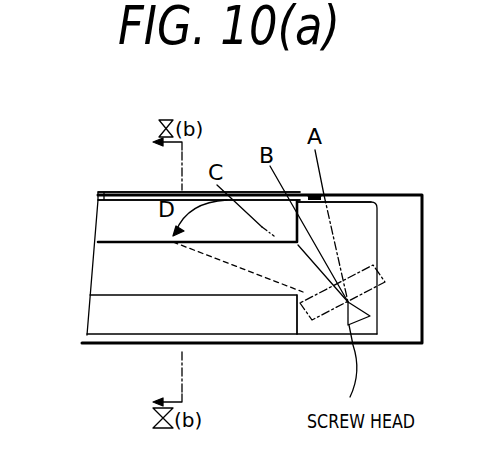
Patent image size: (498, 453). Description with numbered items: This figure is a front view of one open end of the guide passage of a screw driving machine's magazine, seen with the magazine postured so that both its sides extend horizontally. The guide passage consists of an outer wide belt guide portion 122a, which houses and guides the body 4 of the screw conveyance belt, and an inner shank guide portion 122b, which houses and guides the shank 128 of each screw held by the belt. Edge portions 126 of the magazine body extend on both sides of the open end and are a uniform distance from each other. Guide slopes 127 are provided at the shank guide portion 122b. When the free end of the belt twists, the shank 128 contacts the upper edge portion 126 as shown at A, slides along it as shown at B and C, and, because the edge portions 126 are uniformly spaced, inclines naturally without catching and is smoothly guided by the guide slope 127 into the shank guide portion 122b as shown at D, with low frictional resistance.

The edge portion 126 is at (133, 192).
The guide slope 127 is at (112, 207).
The shank 128 is at (323, 163).
The belt guide portion 122a is at (362, 215).
The shank guide portion 122b is at (248, 283).
The body of screw conveyance belt 4 is at (378, 268).